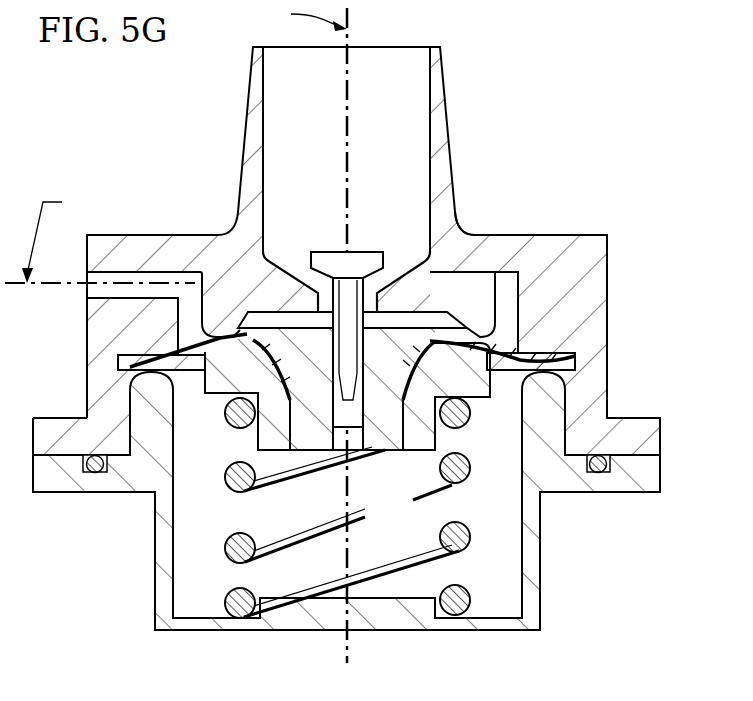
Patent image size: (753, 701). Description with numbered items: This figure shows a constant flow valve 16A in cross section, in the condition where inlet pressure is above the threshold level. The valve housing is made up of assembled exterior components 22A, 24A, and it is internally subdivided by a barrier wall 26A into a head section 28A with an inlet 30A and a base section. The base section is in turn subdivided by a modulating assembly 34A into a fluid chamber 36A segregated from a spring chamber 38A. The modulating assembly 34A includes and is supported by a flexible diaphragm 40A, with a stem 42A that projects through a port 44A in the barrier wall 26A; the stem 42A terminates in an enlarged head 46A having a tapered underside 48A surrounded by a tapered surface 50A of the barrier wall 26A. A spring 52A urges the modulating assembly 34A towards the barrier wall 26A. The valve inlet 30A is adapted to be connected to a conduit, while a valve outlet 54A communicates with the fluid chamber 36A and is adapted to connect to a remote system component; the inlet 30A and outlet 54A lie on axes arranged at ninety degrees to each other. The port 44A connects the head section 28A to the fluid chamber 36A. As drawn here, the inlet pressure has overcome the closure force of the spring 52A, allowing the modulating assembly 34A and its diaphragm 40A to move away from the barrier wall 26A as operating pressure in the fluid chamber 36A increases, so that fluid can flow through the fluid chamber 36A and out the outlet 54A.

The pressure regulator 16A is at (560, 120).
The exterior component 22A is at (588, 232).
The exterior component 24A is at (540, 520).
The barrier wall 26A is at (260, 290).
The head section 28A is at (412, 139).
The inlet 30A is at (380, 47).
The modulating assembly 34A is at (210, 411).
The fluid chamber 36A is at (491, 231).
The spring chamber 38A is at (232, 532).
The flexible diaphragm 40A is at (573, 355).
The stem 42A is at (353, 360).
The port 44A is at (505, 280).
The enlarged head 46A is at (322, 250).
The tapered underside 48A is at (396, 262).
The tapered surface 50A is at (276, 272).
The spring 52A is at (420, 577).
The valve outlet 54A is at (93, 290).